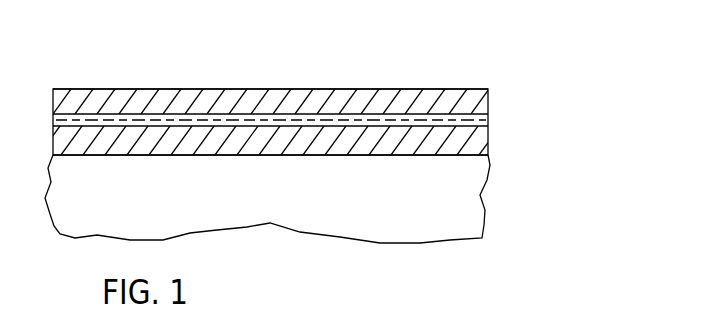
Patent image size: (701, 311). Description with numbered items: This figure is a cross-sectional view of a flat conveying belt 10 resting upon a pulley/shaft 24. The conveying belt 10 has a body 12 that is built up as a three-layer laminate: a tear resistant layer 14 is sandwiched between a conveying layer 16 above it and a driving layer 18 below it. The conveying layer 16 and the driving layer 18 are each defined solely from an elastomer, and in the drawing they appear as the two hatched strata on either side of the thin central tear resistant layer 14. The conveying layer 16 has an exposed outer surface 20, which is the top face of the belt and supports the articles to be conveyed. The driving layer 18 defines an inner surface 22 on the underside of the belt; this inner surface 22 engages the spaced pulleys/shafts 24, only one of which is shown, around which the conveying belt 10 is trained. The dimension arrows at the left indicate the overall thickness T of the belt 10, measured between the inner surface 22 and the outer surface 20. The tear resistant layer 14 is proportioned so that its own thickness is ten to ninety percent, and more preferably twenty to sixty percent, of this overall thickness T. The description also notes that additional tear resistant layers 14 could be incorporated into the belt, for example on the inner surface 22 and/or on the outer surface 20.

The conveying belt 10 is at (420, 33).
The body 12 is at (84, 89).
The tear resistant layer 14 is at (490, 112).
The conveying layer 16 is at (197, 98).
The driving layer 18 is at (224, 146).
The outer surface 20 is at (250, 89).
The inner surface 22 is at (405, 156).
The pulley/shaft 24 is at (306, 197).
The overall thickness T is at (163, 200).